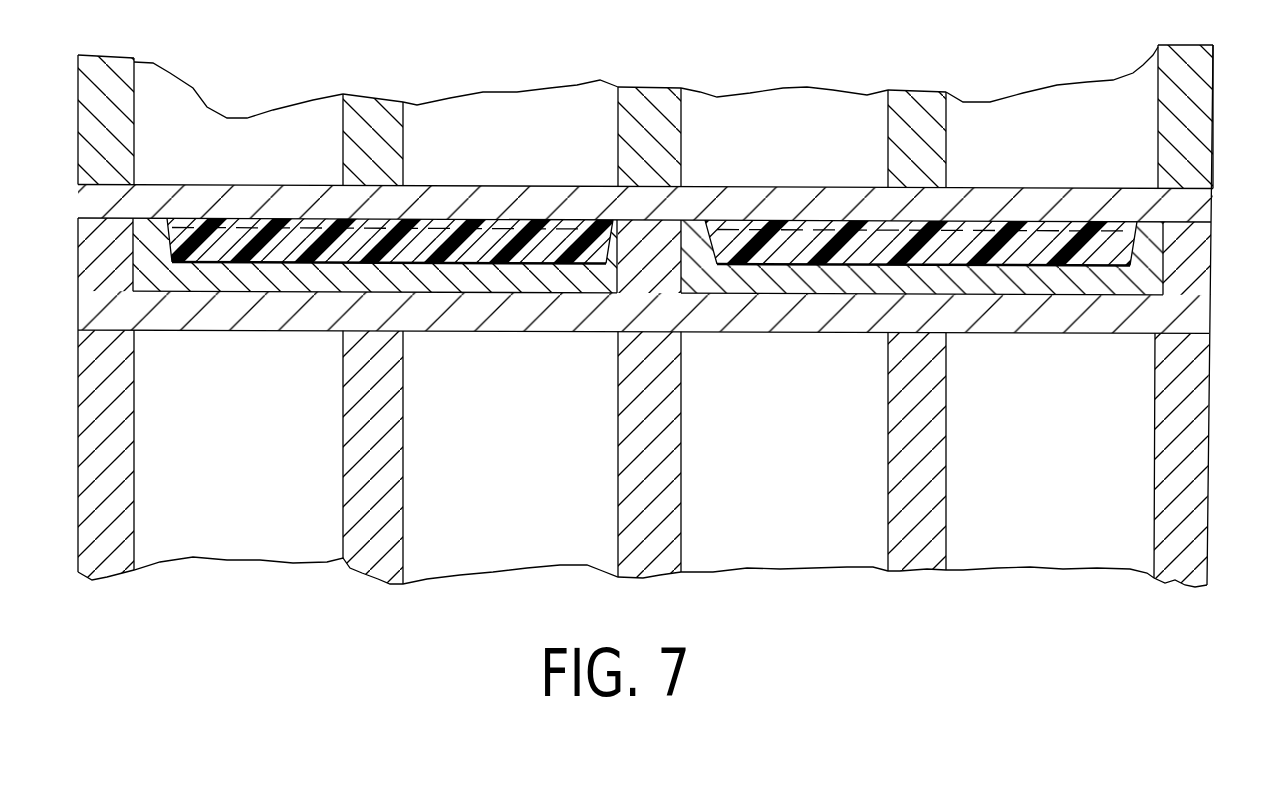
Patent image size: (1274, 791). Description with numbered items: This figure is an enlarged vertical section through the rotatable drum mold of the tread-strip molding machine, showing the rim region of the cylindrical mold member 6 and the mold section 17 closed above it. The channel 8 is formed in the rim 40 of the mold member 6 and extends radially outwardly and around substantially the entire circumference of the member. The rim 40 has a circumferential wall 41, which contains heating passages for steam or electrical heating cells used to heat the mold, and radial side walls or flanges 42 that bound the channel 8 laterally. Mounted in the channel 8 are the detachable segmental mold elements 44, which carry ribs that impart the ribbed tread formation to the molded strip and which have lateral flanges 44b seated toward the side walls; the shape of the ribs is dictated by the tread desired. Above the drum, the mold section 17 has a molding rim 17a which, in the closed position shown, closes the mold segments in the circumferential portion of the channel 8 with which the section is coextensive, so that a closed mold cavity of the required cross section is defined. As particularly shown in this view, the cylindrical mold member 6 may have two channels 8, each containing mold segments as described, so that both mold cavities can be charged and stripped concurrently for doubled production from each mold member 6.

The mold section 17 is at (475, 125).
The molding rim 17a is at (483, 191).
The radial side walls or flanges 42 is at (171, 243).
The lateral flanges 44b is at (710, 222).
The circumferential wall 41 is at (507, 292).
The channel 8 is at (297, 292).
The rim 40 is at (953, 317).
The segmental mold elements 44 is at (1010, 288).
The cylindrical or drum mold member 6 is at (740, 562).